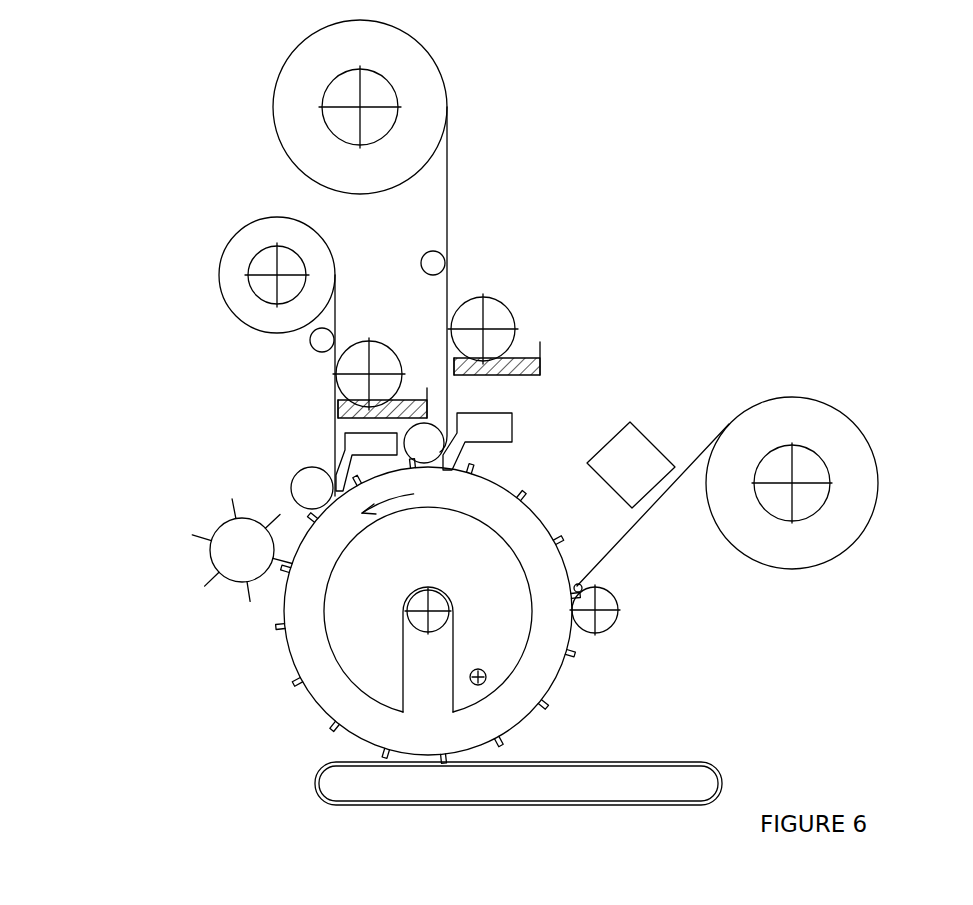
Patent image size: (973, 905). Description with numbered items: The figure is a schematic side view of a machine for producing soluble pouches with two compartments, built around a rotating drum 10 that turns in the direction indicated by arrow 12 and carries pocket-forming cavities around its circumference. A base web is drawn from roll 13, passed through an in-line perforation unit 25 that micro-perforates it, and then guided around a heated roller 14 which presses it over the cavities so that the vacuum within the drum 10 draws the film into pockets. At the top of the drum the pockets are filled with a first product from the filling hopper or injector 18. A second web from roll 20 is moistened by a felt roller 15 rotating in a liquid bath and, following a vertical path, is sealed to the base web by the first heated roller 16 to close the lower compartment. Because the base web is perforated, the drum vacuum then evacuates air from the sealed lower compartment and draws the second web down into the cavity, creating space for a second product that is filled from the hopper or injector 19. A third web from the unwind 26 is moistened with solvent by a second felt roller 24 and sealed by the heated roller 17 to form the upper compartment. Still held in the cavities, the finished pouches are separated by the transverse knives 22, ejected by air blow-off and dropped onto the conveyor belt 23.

The drum 10 is at (531, 668).
The arrow 12 is at (398, 505).
The roll of base web 13 is at (870, 445).
The heated roller 14 is at (611, 592).
The felt roller 15 is at (510, 313).
The heated roller 16 is at (436, 421).
The heated roller 17 is at (293, 475).
The filling hopper or injector 18 is at (512, 421).
The product hopper or injector 19 is at (343, 446).
The roll of second web 20 is at (285, 145).
The transverse knives 22 is at (214, 524).
The conveyor belt 23 is at (318, 784).
The felt roller 24 is at (390, 348).
The perforation unit 25 is at (648, 432).
The unwind of third web 26 is at (225, 296).